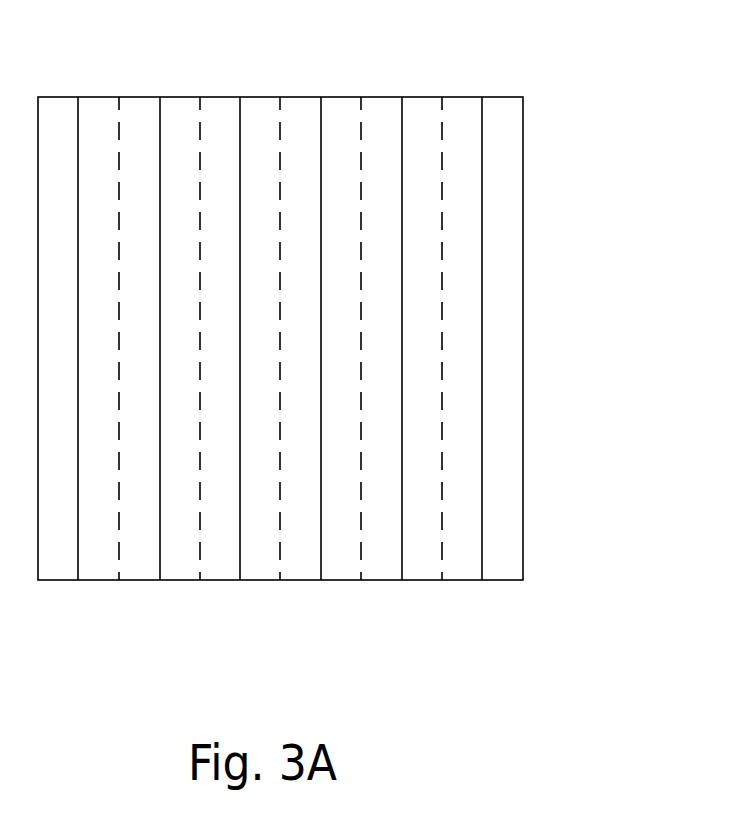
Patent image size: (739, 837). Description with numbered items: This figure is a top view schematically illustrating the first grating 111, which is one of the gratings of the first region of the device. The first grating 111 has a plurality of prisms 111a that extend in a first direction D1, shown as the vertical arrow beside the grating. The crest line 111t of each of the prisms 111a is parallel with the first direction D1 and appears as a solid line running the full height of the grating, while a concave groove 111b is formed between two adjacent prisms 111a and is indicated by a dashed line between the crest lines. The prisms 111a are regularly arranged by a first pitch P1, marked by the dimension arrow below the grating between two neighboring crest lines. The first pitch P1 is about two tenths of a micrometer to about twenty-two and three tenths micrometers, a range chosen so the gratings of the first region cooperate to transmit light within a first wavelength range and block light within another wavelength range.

The first grating 111 is at (383, 97).
The prisms 111a is at (108, 107).
The crest line 111t is at (482, 160).
The concave groove 111b is at (442, 217).
The first pitch P1 is at (78, 592).
The first direction D1 is at (585, 335).